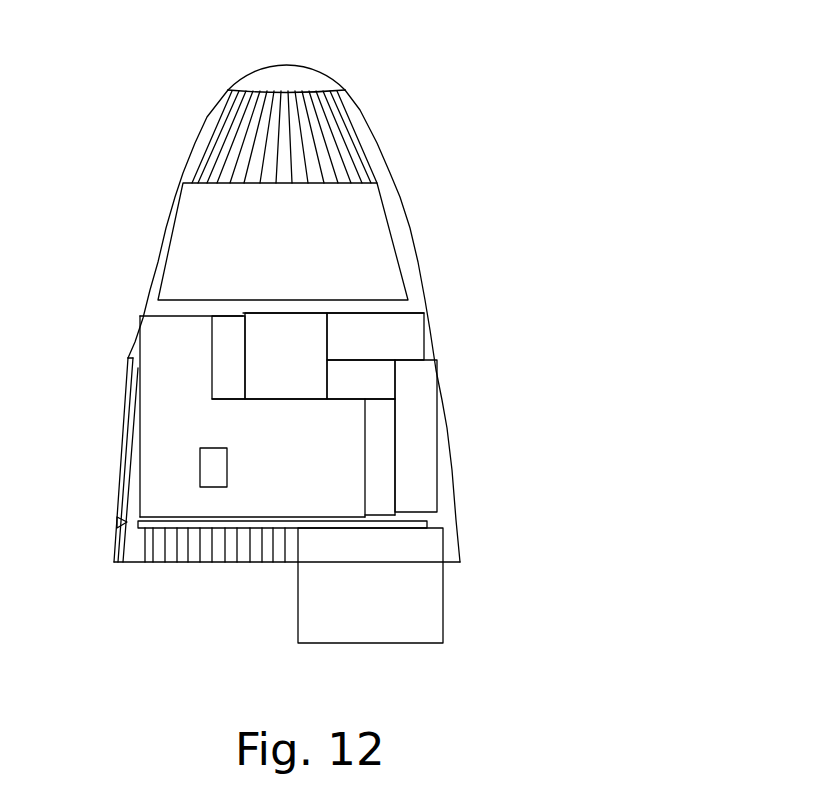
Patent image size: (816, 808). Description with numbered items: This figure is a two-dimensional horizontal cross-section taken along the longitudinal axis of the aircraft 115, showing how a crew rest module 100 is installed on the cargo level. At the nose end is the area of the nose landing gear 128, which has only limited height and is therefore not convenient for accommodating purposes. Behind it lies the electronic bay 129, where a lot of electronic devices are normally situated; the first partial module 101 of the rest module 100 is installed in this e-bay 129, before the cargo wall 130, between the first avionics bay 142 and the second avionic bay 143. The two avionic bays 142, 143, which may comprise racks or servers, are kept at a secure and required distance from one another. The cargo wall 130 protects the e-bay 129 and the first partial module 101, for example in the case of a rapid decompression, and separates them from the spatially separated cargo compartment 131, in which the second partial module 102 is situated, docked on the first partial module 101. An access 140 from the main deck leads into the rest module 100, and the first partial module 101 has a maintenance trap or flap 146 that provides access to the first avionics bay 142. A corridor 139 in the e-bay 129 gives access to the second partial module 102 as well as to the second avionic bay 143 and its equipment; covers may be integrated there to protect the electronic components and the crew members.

The rest module 100 is at (450, 568).
The first partial module 101 is at (231, 421).
The second partial module 102 is at (310, 613).
The aircraft 115 is at (383, 153).
The nose landing gear 128 is at (517, 78).
The electronic bay 129 is at (517, 317).
The cargo wall 130 is at (145, 528).
The cargo compartment 131 is at (517, 520).
The corridor for reaching the second partial module 139 is at (242, 264).
The access from main deck 140 is at (154, 289).
The first avionics bay 142 is at (160, 472).
The second avionic bay 143 is at (392, 331).
The maintenance trap or flap 146 is at (200, 469).